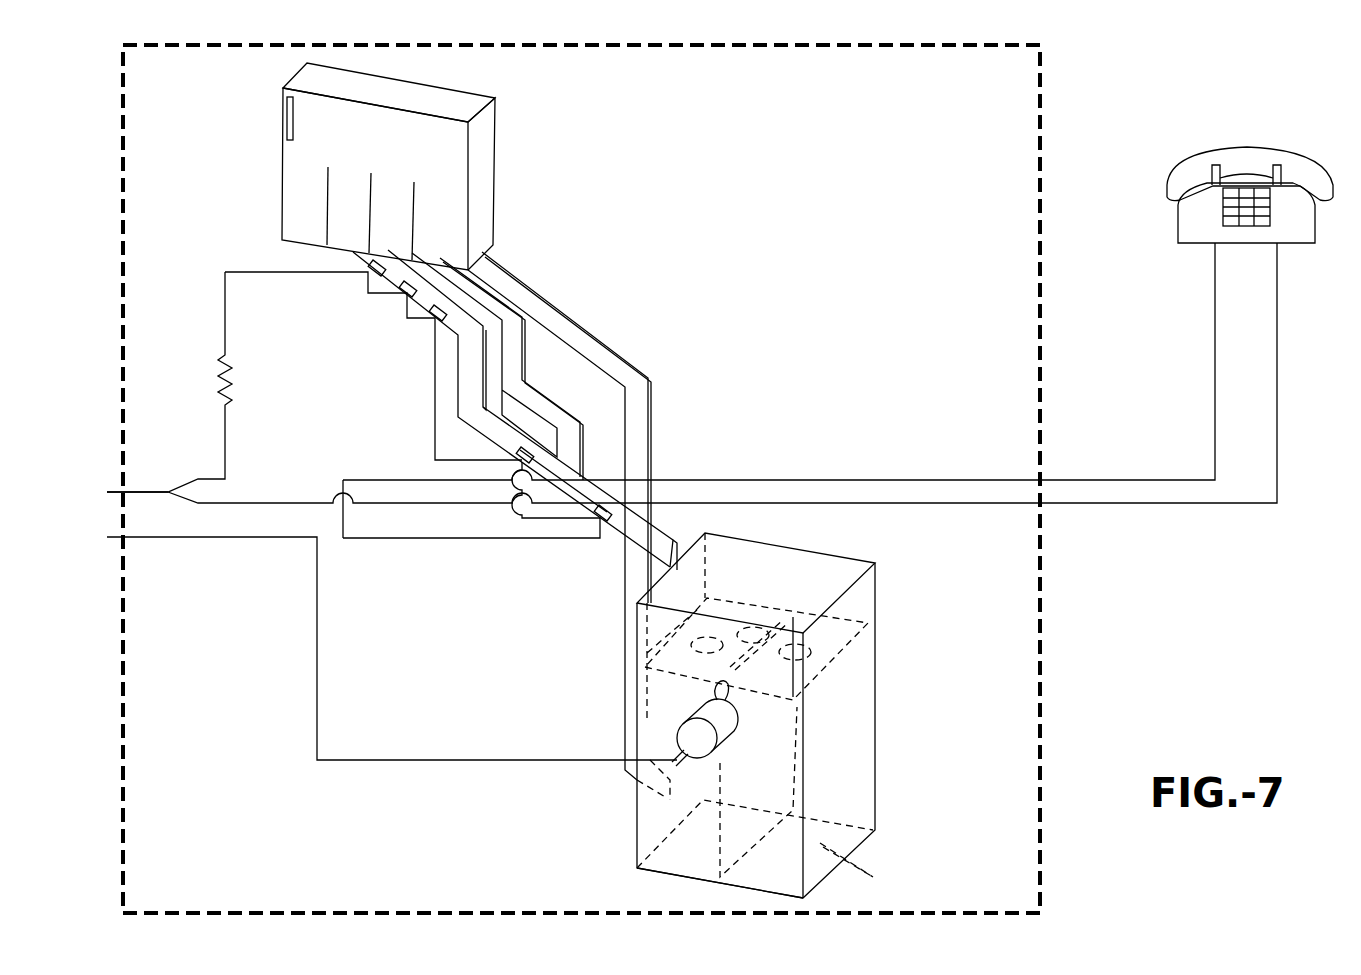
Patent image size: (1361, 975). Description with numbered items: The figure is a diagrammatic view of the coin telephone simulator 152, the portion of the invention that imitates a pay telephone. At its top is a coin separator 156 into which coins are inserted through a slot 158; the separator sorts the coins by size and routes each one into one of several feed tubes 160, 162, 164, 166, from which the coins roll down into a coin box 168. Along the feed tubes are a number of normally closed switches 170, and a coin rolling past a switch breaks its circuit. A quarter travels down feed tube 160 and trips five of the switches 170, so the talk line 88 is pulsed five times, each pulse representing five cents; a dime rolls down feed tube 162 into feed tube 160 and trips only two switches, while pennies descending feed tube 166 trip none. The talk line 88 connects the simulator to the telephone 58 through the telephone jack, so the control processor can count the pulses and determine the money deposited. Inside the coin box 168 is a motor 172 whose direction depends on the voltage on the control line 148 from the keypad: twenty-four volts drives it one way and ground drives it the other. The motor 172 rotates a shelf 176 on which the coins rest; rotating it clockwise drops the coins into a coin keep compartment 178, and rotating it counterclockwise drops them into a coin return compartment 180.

The telephone 58 is at (1177, 223).
The interconnection (talk line) 88 is at (85, 492).
The control line (interconnection) 148 is at (85, 537).
The coin telephone simulator 152 is at (570, 479).
The coin separator 156 is at (487, 185).
The slot 158 is at (290, 108).
The feed tube 160 is at (473, 398).
The feed tube 162 is at (490, 372).
The feed tube 164 is at (547, 393).
The feed tube 166 is at (645, 370).
The coin box 168 is at (877, 680).
The normally closed switches 170 is at (368, 281).
The motor 172 is at (683, 723).
The shelf 176 is at (877, 600).
The coin keep compartment 178 is at (823, 847).
The coin return compartment 180 is at (637, 868).